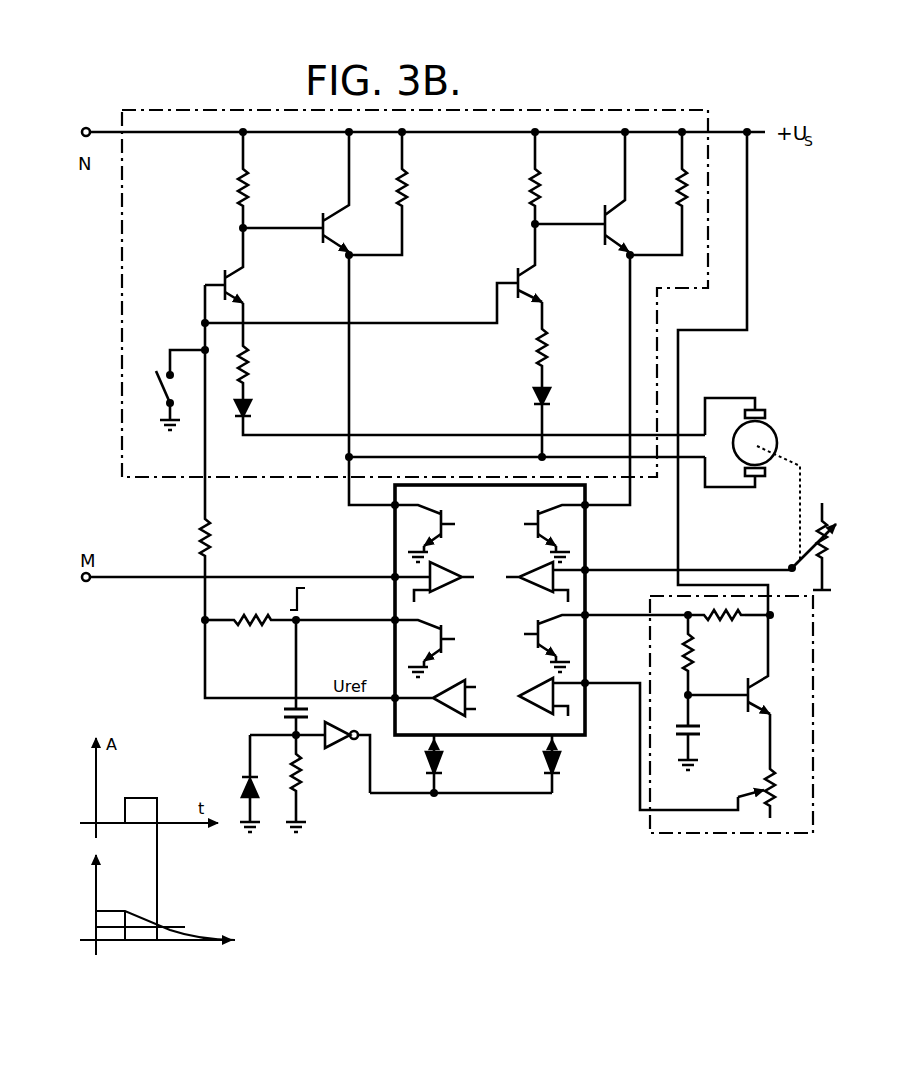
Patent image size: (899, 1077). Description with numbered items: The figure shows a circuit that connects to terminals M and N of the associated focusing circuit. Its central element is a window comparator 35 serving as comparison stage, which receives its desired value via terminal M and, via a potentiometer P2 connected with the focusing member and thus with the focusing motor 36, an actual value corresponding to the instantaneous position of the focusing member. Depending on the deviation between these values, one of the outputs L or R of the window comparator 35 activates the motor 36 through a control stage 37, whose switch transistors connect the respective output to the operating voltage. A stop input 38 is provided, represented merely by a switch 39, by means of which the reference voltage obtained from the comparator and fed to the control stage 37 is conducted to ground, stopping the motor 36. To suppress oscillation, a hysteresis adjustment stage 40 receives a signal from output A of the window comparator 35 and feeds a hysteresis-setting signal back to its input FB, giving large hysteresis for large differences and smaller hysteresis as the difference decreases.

The window comparator 35 is at (586, 746).
The focusing motor 36 is at (774, 426).
The control stage 37 is at (530, 104).
The stop input 38 is at (178, 330).
The switch 39 is at (154, 390).
The hysteresis adjustment stage 40 is at (706, 842).
The potentiometer P2 is at (727, 537).